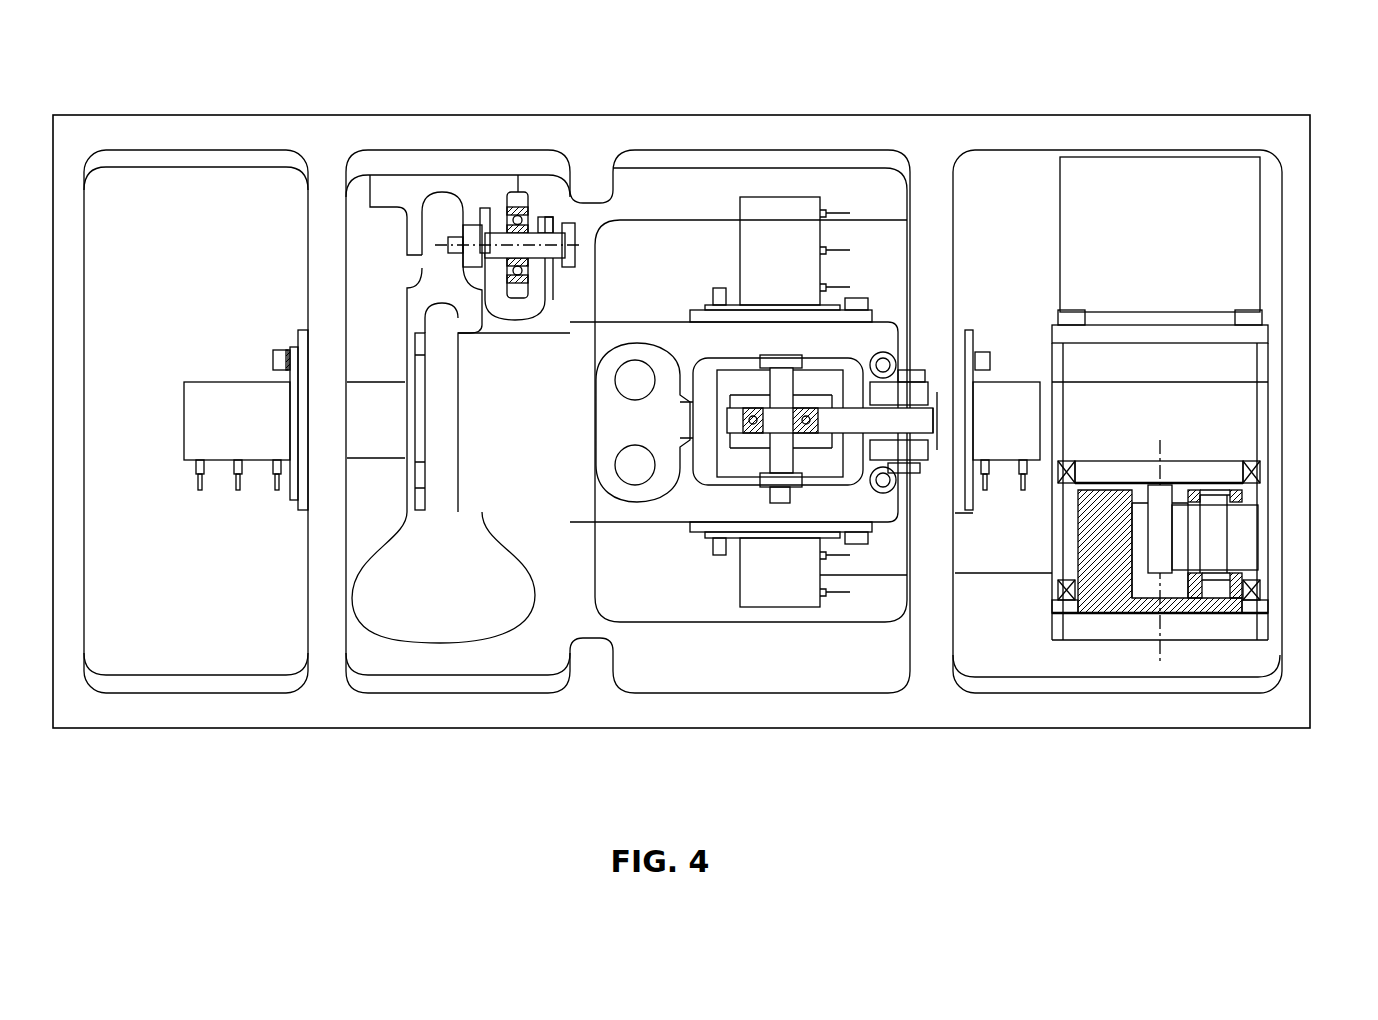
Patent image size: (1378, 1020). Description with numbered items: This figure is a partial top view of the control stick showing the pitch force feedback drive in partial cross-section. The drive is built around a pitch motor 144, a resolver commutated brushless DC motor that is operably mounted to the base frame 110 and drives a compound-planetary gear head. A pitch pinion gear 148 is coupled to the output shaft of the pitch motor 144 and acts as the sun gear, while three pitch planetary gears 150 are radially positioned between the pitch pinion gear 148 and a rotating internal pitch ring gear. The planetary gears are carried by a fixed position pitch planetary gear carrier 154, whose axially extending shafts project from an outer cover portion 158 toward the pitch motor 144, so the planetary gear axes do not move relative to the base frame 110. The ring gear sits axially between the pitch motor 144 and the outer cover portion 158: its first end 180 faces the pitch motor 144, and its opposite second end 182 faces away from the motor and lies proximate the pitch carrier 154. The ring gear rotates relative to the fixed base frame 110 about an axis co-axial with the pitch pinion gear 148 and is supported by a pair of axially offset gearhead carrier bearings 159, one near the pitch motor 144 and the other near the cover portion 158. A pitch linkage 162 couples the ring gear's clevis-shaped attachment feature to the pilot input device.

The base frame 110 is at (922, 113).
The pitch motor 144 is at (1122, 165).
The first end 180 is at (1075, 470).
The gearhead carrier bearing 159 is at (1095, 470).
The pitch linkage 162 is at (985, 565).
The pitch planetary gear carrier 154 is at (1145, 557).
The pitch pinion gear 148 is at (1110, 567).
The outer cover portion 158 is at (1175, 617).
The pitch planetary gear 150 is at (1242, 553).
The second end 182 is at (1068, 615).